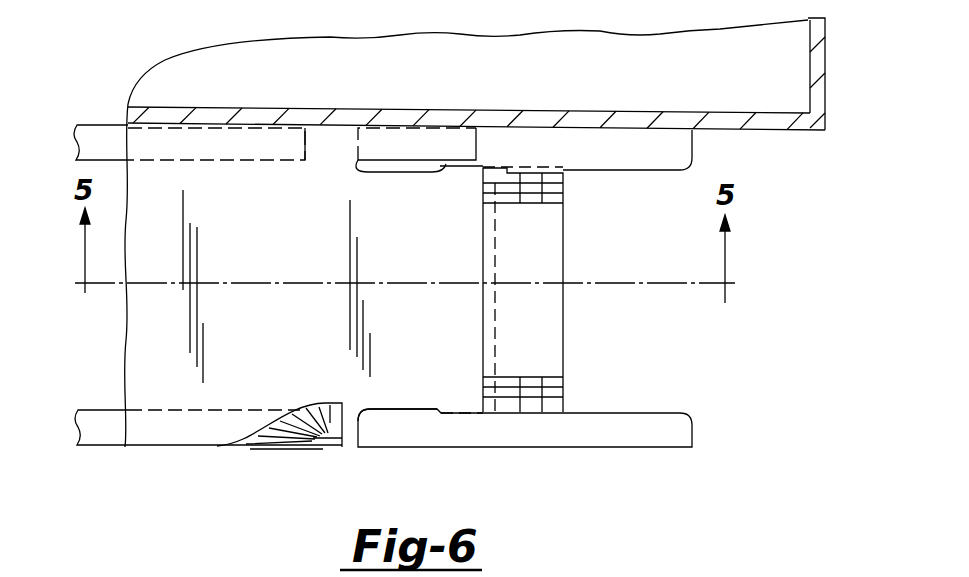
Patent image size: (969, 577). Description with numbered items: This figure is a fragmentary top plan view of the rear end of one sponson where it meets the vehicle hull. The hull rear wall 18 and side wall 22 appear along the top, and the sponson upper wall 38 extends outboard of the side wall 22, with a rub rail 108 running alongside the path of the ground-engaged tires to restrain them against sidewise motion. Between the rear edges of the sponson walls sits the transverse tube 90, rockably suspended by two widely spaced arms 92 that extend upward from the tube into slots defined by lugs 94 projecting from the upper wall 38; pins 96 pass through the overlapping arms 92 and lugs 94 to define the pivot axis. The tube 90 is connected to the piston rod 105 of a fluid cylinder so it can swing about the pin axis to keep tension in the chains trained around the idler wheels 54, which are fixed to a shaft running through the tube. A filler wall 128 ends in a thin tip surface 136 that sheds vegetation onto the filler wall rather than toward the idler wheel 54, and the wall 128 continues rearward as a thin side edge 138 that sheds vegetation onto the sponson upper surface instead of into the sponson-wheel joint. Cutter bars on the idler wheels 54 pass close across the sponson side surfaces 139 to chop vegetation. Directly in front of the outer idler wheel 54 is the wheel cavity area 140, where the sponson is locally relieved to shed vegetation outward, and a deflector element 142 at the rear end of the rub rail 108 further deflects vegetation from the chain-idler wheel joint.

The rear wall 18 is at (827, 63).
The side wall 22 is at (767, 128).
The sponson upper wall 38 is at (153, 332).
The idler wheel 54 is at (592, 147).
The transverse tube 90 is at (493, 341).
The arms 92 is at (563, 188).
The lugs 94 is at (563, 178).
The pins 96 is at (520, 200).
The piston rod 105 is at (562, 321).
The rub rails 108 is at (127, 78).
The filler wall 128 is at (330, 153).
The thin tip surface 136 is at (477, 147).
The thin side edge 138 is at (445, 175).
The sponson side surfaces 139 is at (469, 413).
The wheel cavity area 140 is at (358, 430).
The deflector element 142 is at (325, 440).